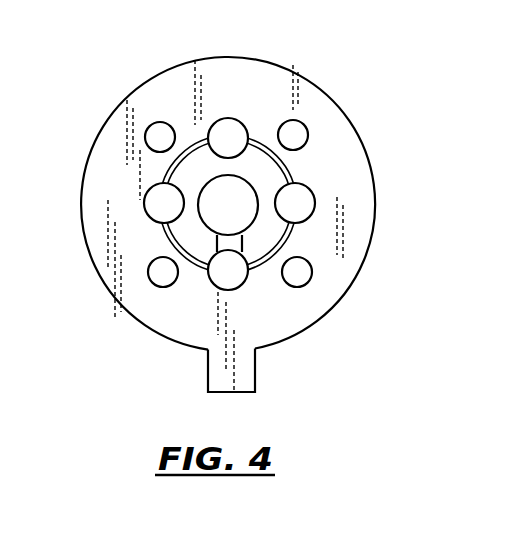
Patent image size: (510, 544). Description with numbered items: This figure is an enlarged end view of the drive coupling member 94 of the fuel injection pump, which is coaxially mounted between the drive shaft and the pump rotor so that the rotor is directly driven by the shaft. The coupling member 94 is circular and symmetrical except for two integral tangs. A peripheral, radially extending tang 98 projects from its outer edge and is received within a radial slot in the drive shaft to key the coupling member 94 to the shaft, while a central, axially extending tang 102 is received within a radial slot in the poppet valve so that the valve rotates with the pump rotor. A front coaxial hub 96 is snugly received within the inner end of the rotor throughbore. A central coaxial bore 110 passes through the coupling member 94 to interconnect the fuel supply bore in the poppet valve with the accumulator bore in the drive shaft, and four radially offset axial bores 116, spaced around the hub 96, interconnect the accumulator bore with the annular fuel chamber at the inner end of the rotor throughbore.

The drive coupling member 94 is at (321, 90).
The front coaxial hub 96 is at (275, 177).
The peripheral radially extending tang 98 is at (256, 370).
The central axially extending tang 102 is at (218, 249).
The central coaxial bore 110 is at (256, 190).
The radially offset axial bores 116 is at (221, 118).